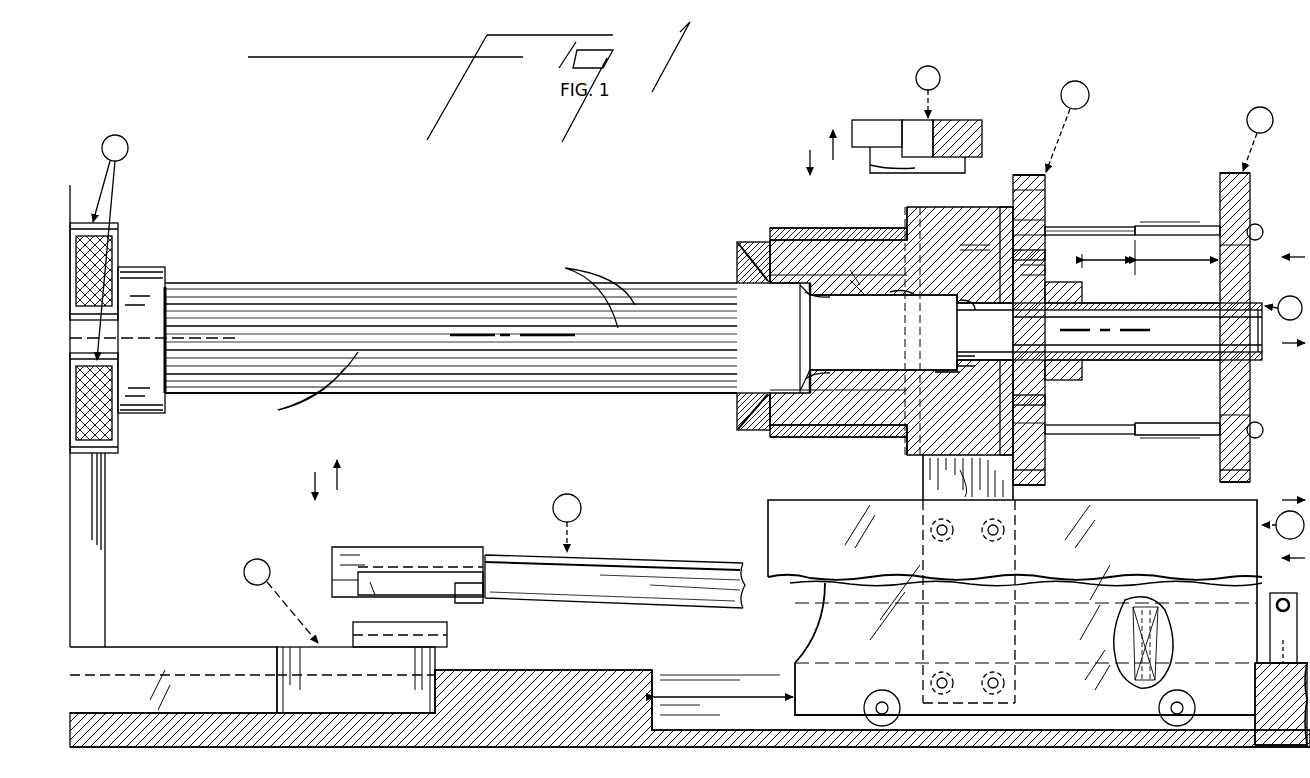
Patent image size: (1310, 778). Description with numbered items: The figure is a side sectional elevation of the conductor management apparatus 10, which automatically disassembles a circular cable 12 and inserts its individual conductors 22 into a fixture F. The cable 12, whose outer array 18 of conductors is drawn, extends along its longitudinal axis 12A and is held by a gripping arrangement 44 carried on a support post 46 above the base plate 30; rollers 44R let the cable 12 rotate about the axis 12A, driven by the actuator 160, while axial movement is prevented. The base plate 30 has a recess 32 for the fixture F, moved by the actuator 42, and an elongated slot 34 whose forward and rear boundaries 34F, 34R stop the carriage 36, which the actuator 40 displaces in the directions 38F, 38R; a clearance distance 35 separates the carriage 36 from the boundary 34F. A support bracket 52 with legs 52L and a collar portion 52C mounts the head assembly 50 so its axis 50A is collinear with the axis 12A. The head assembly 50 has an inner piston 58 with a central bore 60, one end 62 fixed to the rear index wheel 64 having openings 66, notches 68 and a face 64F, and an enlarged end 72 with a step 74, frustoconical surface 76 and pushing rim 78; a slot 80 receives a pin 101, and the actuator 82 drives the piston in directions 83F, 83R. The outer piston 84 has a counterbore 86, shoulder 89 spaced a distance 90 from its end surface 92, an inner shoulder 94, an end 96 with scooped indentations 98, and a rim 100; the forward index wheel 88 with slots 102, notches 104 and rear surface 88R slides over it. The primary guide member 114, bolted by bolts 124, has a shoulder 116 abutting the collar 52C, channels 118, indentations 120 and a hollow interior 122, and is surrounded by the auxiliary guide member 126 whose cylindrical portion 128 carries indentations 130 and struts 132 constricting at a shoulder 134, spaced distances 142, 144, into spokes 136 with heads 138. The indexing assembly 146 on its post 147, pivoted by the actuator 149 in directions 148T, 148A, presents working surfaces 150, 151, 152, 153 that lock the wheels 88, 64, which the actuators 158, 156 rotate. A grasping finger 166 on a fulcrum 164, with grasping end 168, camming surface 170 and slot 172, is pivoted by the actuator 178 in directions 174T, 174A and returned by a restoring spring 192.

The conductor management apparatus 10 is at (660, 212).
The circular cable 12 is at (172, 263).
The longitudinal axis 12A is at (465, 325).
The outer array of conductors 18 is at (490, 280).
The individual electrical conductors 22 is at (448, 336).
The base plate 30 is at (210, 735).
The recess 32 is at (345, 713).
The elongated slot 34 is at (720, 700).
The forward boundary 34F is at (700, 662).
The rear boundary 34R is at (1240, 695).
The clearance distance 35 is at (723, 696).
The carriage 36 is at (760, 512).
The forward direction arrow 38F is at (1300, 562).
The rearward direction arrow 38R is at (1255, 492).
The carriage actuator 40 is at (1282, 537).
The fixture actuator 42 is at (237, 565).
The gripping arrangement 44 is at (212, 226).
The rollers 44R is at (118, 228).
The support post 46 is at (106, 545).
The head assembly 50 is at (735, 268).
The head assembly axis 50A is at (1130, 365).
The support bracket 52 is at (920, 484).
The collar portion 52C is at (950, 485).
The legs 52L is at (968, 505).
The inner piston 58 is at (1107, 365).
The central bore 60 is at (1118, 362).
The end of inner piston 62 is at (1252, 350).
The rear index wheel 64 is at (1250, 386).
The face of rear wheel 64F is at (1220, 464).
The openings 66 is at (1252, 248).
The index notches 68 is at (1225, 170).
The enlarged end of inner piston 72 is at (985, 331).
The circumferential step 74 is at (985, 331).
The frustoconical surface 76 is at (956, 377).
The rim 78 is at (956, 358).
The axially extending slot 80 is at (1183, 302).
The inner piston actuator 82 is at (1288, 320).
The forward piston direction 83F is at (1289, 256).
The rearward piston direction 83R is at (1290, 350).
The outer piston 84 is at (926, 331).
The counterbore 86 is at (893, 286).
The forward index wheel 88 is at (1046, 190).
The rear surface of forward wheel 88R is at (1046, 455).
The shoulder 89 is at (977, 258).
The predetermined distance 90 is at (1046, 272).
The annular surface 92 is at (1083, 288).
The annular shoulder 94 is at (969, 322).
The other end of outer piston 96 is at (859, 272).
The scooped indentations 98 is at (806, 264).
The annular rim 100 is at (822, 395).
The pin 101 is at (1026, 331).
The arcuate slots 102 is at (1046, 228).
The index notches 104 is at (1020, 175).
The primary conductor guide member 114 is at (830, 437).
The annular shoulder 116 is at (912, 452).
The channels 118 is at (985, 244).
The scooped indentations 120 is at (735, 256).
The hollow interior 122 is at (798, 437).
The bolts 124 is at (1063, 410).
The auxiliary guide member 126 is at (818, 234).
The cylindrical portion 128 is at (778, 228).
The indentations 130 is at (770, 235).
The struts 132 is at (1112, 227).
The shoulder 134 is at (1136, 226).
The spokes 136 is at (1196, 226).
The enlarged heads 138 is at (1262, 225).
The predetermined distance 142 is at (1108, 257).
The distance 144 is at (1177, 250).
The indexing assembly 146 is at (1005, 73).
The support post 147 is at (884, 168).
The retracting direction arrow 148A is at (822, 135).
The engaging direction arrow 148T is at (808, 158).
The indexing actuator 149 is at (926, 62).
The working surface 150 is at (868, 135).
The working surface 151 is at (902, 128).
The working surface 152 is at (925, 180).
The working surface 153 is at (933, 125).
The rear wheel actuator 156 is at (1252, 107).
The forward wheel actuator 158 is at (1088, 90).
The gripping means actuator 160 is at (127, 138).
The fulcrum 164 is at (1270, 627).
The grasping finger 166 is at (640, 558).
The grasping end 168 is at (372, 550).
The camming surface 170 is at (420, 560).
The conductor-engaging slot 172 is at (373, 598).
The finger retracting direction arrow 174A is at (310, 478).
The finger advancing direction arrow 174T is at (340, 480).
The finger actuator 178 is at (570, 492).
The restoring spring 192 is at (1115, 672).
The fixture F is at (290, 648).